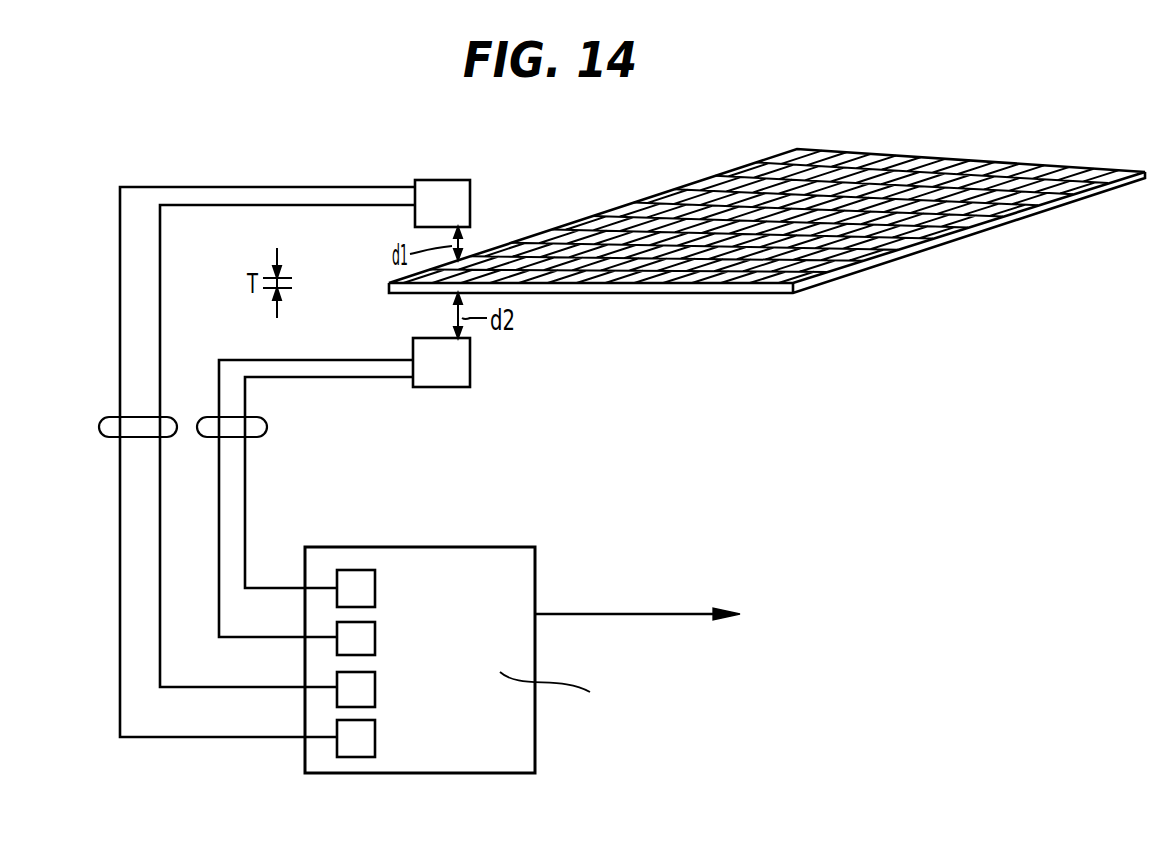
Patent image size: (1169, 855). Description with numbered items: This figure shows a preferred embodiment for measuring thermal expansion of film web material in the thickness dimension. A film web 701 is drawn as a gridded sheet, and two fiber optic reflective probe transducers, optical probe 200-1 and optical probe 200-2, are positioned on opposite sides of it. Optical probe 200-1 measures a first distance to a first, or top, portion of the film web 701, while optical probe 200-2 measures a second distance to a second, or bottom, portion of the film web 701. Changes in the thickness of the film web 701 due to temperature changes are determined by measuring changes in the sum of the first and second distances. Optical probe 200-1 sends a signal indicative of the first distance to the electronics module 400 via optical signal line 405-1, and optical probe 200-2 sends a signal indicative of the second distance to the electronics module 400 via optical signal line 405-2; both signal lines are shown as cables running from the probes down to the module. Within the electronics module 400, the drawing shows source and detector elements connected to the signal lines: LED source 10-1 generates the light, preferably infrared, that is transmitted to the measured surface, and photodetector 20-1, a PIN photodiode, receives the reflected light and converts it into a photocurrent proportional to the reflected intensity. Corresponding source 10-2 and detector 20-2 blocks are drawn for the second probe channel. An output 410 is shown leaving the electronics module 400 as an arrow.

The optical probe 200-1 is at (450, 180).
The optical probe 200-2 is at (470, 362).
The film web 701 is at (990, 220).
The optical signal line 405-1 is at (180, 417).
The optical signal line 405-2 is at (267, 427).
The electronics module 400 is at (483, 547).
The output signal 410 is at (598, 612).
The source circuit for second sensor 10-2 is at (375, 580).
The detector circuit for second sensor 20-2 is at (375, 633).
The LED source 10-1 is at (375, 686).
The photodetector 20-1 is at (375, 730).